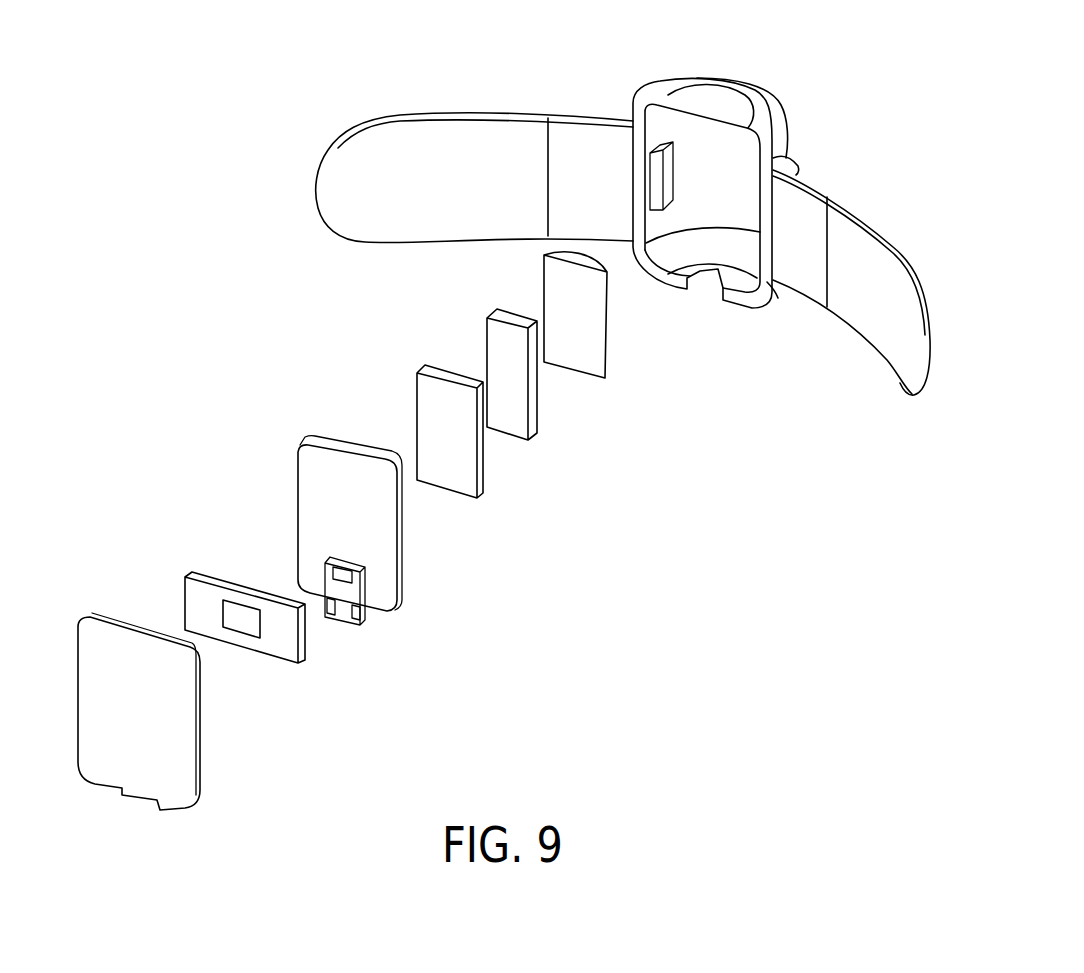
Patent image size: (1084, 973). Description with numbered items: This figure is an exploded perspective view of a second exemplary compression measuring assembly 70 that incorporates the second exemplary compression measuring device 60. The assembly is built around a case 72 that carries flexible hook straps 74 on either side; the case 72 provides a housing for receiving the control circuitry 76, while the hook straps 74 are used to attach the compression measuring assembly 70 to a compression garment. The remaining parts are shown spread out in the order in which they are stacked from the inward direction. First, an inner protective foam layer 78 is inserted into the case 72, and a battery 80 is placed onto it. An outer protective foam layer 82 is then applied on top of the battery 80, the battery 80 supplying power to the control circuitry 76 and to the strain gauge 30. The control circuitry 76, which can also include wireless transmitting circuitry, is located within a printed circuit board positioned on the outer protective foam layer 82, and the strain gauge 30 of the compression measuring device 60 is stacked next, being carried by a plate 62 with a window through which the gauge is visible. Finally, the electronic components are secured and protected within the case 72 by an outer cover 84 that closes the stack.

The compression measuring assembly 70 is at (359, 92).
The case 72 is at (766, 128).
The flexible hook straps 74 is at (886, 280).
The inner protective foam layer 78 is at (587, 343).
The battery 80 is at (510, 402).
The outer protective foam layer 82 is at (458, 460).
The control circuitry 76 is at (373, 540).
The compression measuring device 60 is at (175, 490).
The frame plate 62 is at (205, 605).
The strain gauge 30 is at (242, 618).
The outer cover 84 is at (172, 743).